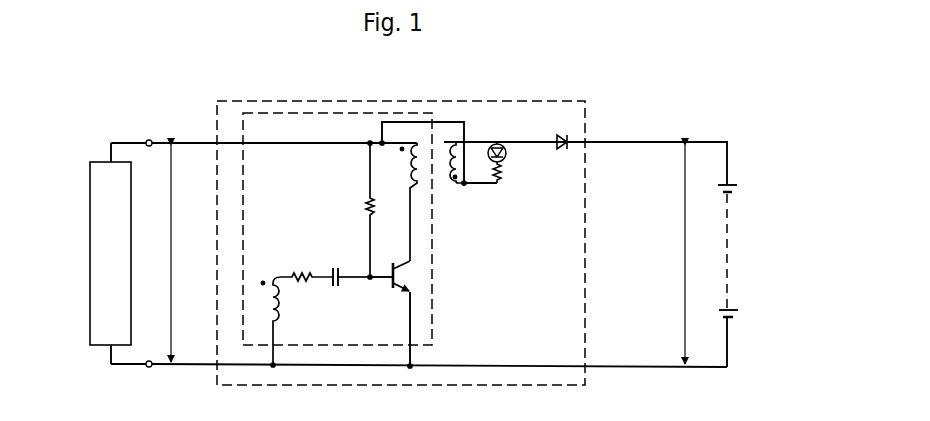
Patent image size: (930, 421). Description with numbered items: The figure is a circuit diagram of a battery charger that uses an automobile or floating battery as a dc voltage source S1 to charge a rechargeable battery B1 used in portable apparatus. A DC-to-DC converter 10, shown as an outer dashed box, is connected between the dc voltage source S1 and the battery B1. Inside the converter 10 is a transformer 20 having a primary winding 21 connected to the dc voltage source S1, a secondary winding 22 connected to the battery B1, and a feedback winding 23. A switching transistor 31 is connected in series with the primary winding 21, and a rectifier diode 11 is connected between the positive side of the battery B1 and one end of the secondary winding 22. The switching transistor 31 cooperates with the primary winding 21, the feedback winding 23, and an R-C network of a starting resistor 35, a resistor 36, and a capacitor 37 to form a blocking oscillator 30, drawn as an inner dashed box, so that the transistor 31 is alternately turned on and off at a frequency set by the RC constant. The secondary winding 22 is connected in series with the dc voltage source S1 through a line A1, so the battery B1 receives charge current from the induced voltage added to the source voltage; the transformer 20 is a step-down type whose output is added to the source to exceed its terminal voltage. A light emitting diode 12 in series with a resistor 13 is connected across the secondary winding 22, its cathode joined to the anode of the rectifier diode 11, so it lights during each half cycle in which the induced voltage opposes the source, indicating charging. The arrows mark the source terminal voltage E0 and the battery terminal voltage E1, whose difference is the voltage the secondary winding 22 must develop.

The dc voltage source S1 is at (95, 183).
The DC-to-DC converter 10 is at (589, 102).
The blocking oscillator 30 is at (247, 112).
The line A1 is at (382, 122).
The transformer 20 is at (443, 161).
The primary winding 21 is at (410, 147).
The secondary winding 22 is at (453, 147).
The feedback winding 23 is at (279, 305).
The rectifier diode 11 is at (559, 137).
The light emitting diode 12 is at (505, 158).
The resistor 13 is at (500, 177).
The switching transistor 31 is at (403, 276).
The starting resistor 35 is at (367, 203).
The resistor 36 is at (302, 271).
The capacitor 37 is at (335, 267).
The rechargeable battery B1 is at (733, 187).
The terminal voltage of the dc power source E0 is at (185, 253).
The terminal voltage of the battery E1 is at (698, 254).